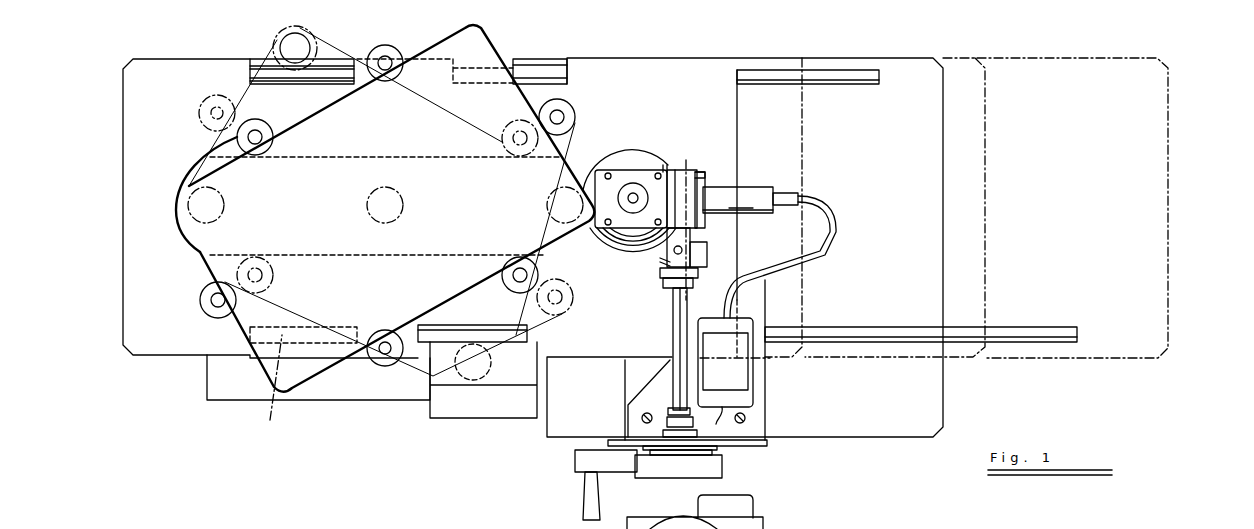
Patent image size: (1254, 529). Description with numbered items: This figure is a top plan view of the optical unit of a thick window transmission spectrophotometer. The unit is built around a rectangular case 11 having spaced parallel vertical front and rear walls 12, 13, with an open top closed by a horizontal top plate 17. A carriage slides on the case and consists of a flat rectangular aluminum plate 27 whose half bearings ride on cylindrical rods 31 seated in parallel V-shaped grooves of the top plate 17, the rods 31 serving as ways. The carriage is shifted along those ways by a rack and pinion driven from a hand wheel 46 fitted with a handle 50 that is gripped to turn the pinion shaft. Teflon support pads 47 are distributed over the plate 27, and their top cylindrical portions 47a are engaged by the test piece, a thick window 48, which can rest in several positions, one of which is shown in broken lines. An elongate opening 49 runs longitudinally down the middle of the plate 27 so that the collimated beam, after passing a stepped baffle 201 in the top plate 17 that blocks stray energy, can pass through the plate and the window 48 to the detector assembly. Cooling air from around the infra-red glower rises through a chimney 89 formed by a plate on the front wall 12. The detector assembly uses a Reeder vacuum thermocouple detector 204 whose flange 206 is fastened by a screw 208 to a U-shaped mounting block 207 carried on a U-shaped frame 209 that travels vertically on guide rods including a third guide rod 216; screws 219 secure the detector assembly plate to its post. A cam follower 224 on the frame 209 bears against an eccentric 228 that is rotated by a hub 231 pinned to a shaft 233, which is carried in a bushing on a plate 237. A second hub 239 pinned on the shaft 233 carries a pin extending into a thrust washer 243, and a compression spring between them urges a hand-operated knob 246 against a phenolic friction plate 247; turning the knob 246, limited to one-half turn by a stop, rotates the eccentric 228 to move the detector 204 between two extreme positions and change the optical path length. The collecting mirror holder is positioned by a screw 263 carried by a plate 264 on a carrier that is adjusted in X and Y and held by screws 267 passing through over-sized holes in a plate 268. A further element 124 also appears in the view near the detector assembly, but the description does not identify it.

The case 11 is at (392, 452).
The front wall 12 is at (336, 402).
The rear wall 13 is at (250, 59).
The top plate 17 is at (898, 422).
The carriage plate 27 is at (142, 302).
The cylindrical rods 31 is at (857, 71).
The hand wheel 46 is at (582, 456).
The support pads 47 is at (397, 55).
The top cylindrical portions 47a is at (382, 357).
The thick window 48 is at (272, 420).
The elongate opening 49 is at (598, 160).
The handle 50 is at (588, 498).
The chimney 89 is at (484, 418).
The cylinder 124 is at (734, 371).
The baffle 201 is at (640, 258).
The vacuum thermocouple detector 204 is at (738, 200).
The flange 206 is at (703, 172).
The mounting block 207 is at (695, 172).
The screw 208 is at (703, 182).
The U-shaped frame 209 is at (700, 258).
The third guide rod 216 is at (668, 258).
The screws 219 is at (644, 414).
The cam follower 224 is at (713, 268).
The eccentric 228 is at (664, 280).
The hub 231 is at (667, 290).
The shaft 233 is at (672, 345).
The plate 237 is at (768, 443).
The hub 239 is at (667, 413).
The thrust washer 243 is at (665, 431).
The knob 246 is at (722, 467).
The friction plate 247 is at (720, 448).
The screw 263 is at (640, 172).
The plate 264 is at (633, 196).
The screws 267 is at (679, 170).
The plate 268 is at (665, 172).